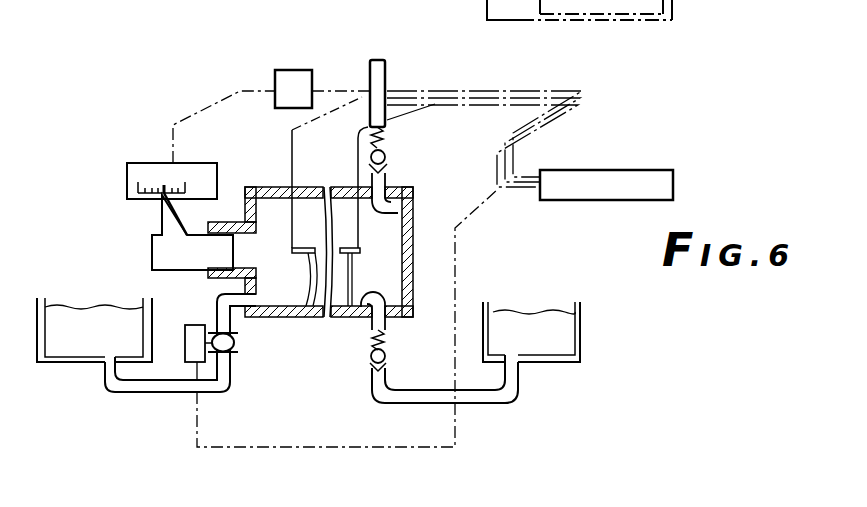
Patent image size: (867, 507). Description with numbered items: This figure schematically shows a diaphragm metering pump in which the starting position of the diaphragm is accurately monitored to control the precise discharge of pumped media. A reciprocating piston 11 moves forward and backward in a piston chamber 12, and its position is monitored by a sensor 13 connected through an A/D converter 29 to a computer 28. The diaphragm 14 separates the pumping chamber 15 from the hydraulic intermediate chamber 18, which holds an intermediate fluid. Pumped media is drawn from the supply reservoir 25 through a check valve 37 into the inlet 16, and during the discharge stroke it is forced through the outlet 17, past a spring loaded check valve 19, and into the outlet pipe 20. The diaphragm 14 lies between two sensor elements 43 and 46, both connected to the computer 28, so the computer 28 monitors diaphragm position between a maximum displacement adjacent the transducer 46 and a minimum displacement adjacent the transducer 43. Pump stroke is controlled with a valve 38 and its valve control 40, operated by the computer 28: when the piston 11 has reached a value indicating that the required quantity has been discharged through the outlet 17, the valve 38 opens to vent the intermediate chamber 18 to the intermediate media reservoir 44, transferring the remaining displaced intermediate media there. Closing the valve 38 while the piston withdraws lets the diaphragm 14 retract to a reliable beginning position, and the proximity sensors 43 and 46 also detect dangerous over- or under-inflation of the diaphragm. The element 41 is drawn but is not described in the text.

The piston 11 is at (200, 262).
The piston chamber 12 is at (242, 268).
The sensor 13 is at (217, 164).
The diaphragm 14 is at (325, 231).
The pumping chamber 15 is at (391, 259).
The inlet 16 is at (361, 318).
The outlet 17 is at (398, 212).
The intermediate chamber 18 is at (292, 284).
The spring loaded check valve 19 is at (387, 167).
The outlet pipe 20 is at (388, 74).
The reservoir 25 is at (554, 348).
The computer 28 is at (589, 168).
The A/D converter 29 is at (300, 70).
The check valve 37 is at (386, 353).
The valve 38 is at (236, 348).
The valve control 40 is at (193, 325).
The control unit 41 is at (579, 10).
The sensor element 43 is at (312, 265).
The intermediate media reservoir 44 is at (108, 338).
The sensor element 46 is at (350, 248).